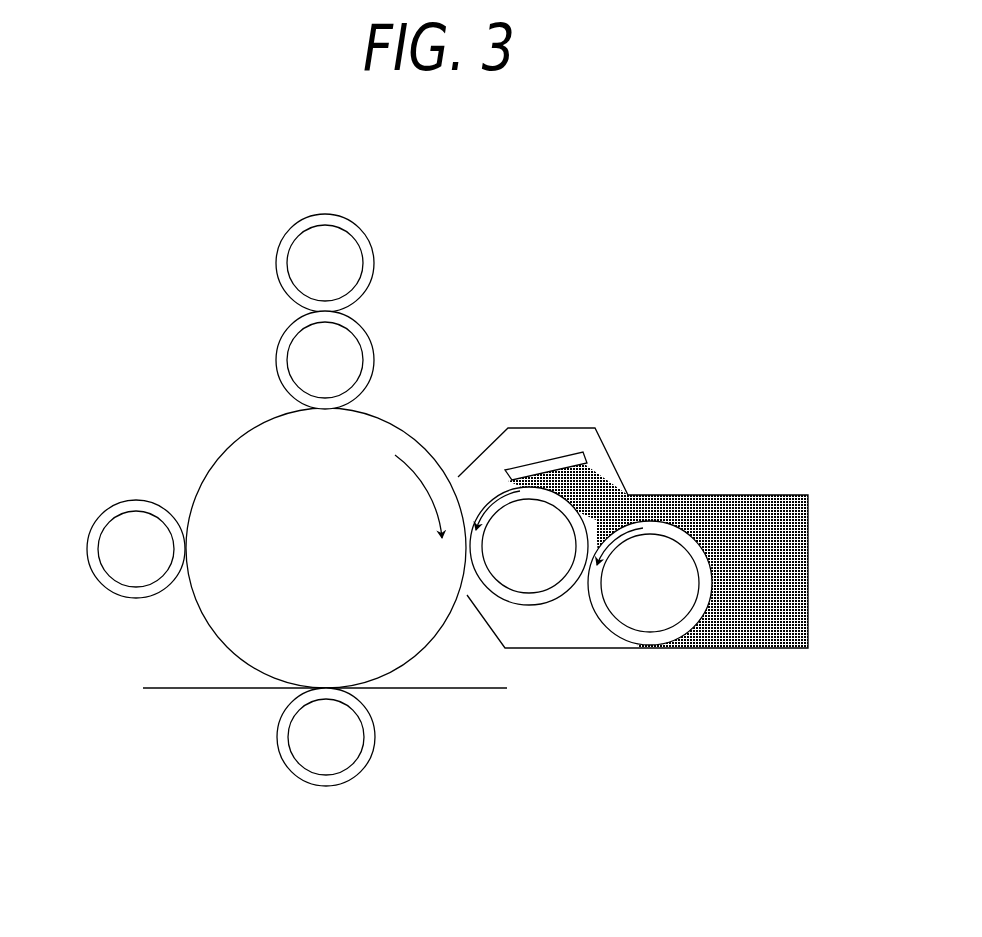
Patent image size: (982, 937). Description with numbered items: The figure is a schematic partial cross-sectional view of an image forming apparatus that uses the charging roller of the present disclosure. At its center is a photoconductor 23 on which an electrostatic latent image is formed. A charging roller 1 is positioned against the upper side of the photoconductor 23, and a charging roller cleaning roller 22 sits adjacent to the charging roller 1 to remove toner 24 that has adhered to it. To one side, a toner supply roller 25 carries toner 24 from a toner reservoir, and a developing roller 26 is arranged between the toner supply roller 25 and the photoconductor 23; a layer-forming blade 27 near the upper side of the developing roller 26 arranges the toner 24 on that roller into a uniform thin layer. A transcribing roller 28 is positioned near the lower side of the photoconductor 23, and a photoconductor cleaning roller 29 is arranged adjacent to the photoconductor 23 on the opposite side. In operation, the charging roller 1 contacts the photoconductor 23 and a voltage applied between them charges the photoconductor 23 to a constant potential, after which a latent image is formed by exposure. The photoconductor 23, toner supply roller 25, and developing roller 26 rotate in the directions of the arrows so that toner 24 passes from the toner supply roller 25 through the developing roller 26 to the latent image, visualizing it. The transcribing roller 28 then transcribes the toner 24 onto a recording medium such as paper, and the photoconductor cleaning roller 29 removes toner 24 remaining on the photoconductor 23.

The charging roller 1 is at (373, 343).
The charging roller cleaning roller 22 is at (373, 247).
The photoconductor 23 is at (242, 462).
The toner 24 is at (748, 522).
The toner supply roller 25 is at (650, 640).
The developing roller 26 is at (535, 602).
The layer-forming blade 27 is at (548, 463).
The transcribing roller 28 is at (328, 790).
The photoconductor cleaning roller 29 is at (105, 513).